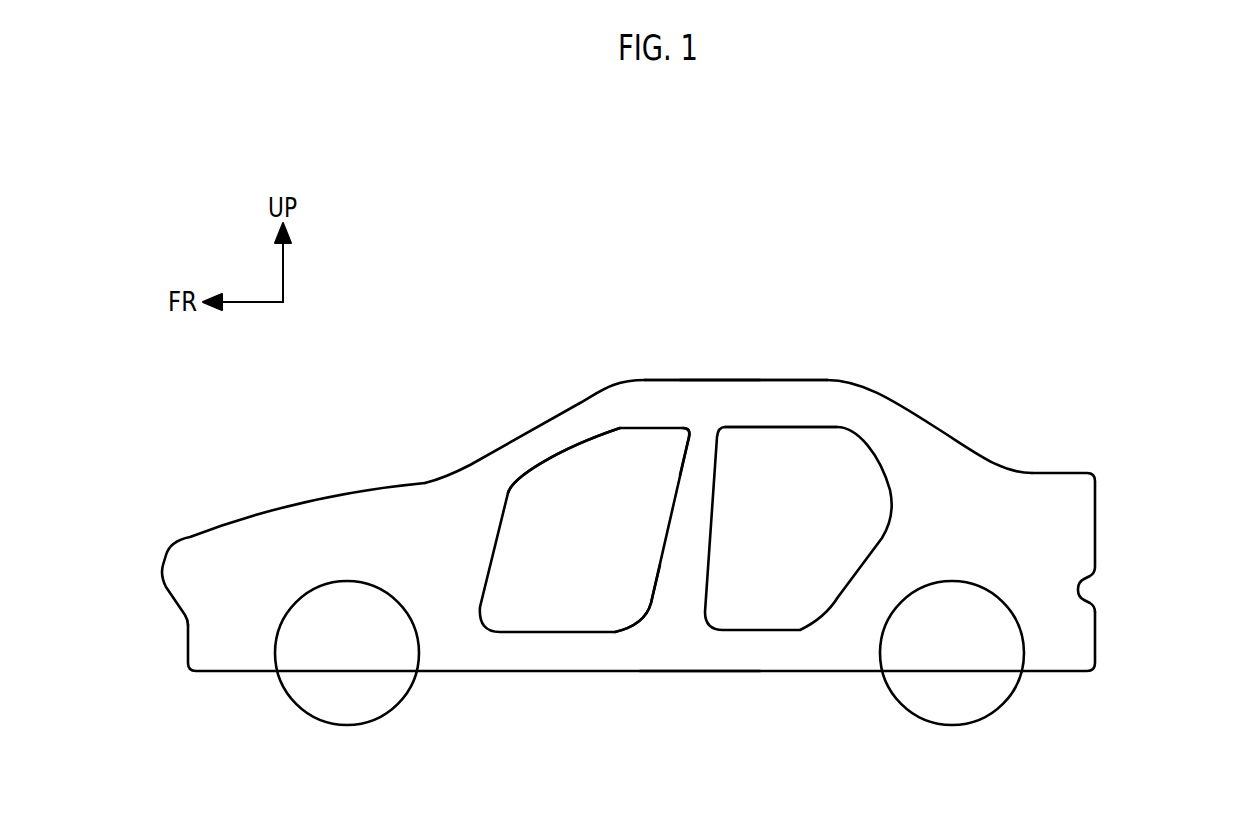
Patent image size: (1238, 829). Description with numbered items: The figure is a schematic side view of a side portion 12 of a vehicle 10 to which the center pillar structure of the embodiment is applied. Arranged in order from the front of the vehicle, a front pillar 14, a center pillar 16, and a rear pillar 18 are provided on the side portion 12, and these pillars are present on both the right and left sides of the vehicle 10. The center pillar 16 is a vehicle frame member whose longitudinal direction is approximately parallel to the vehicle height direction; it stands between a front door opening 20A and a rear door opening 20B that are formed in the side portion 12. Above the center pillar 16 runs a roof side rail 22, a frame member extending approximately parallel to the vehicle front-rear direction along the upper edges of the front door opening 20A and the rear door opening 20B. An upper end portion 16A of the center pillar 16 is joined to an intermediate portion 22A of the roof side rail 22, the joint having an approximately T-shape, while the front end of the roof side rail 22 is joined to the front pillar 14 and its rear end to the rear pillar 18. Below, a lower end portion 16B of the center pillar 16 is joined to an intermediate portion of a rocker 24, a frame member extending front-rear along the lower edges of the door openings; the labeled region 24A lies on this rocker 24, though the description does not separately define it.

The vehicle 10 is at (812, 310).
The side portion 12 is at (763, 355).
The front pillar 14 is at (487, 493).
The center pillar 16 is at (705, 523).
The upper end portion 16A is at (697, 452).
The lower end portion 16B is at (668, 612).
The rear pillar 18 is at (935, 452).
The front door opening 20A is at (593, 437).
The rear door opening 20B is at (799, 430).
The roof side rail 22 is at (662, 393).
The intermediate portion 22A is at (698, 393).
The rocker 24 is at (610, 655).
The upper portion of rocker 24A is at (675, 653).